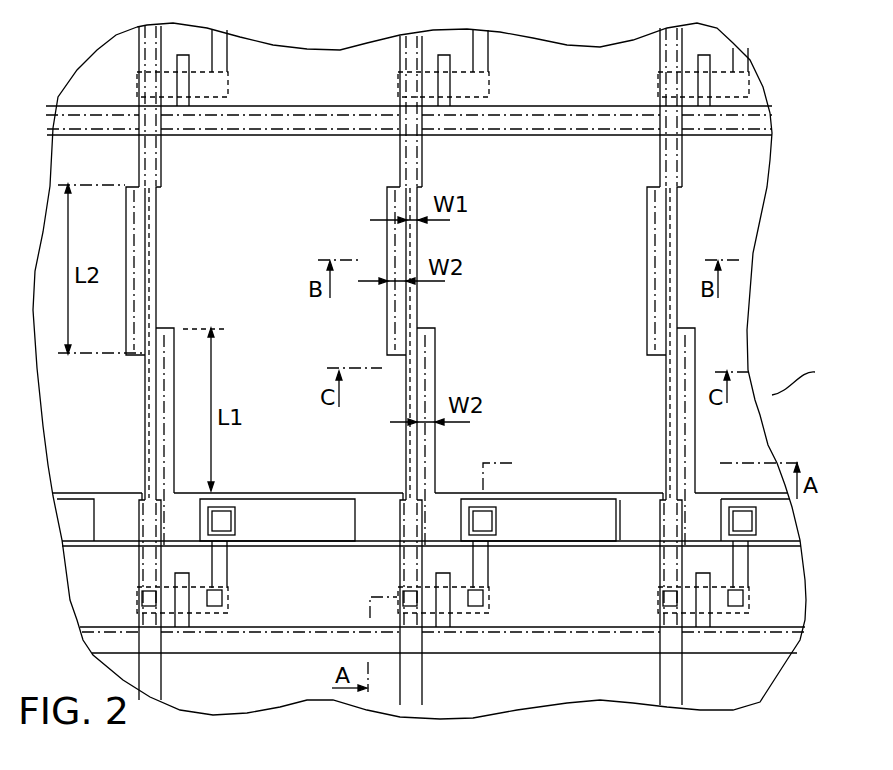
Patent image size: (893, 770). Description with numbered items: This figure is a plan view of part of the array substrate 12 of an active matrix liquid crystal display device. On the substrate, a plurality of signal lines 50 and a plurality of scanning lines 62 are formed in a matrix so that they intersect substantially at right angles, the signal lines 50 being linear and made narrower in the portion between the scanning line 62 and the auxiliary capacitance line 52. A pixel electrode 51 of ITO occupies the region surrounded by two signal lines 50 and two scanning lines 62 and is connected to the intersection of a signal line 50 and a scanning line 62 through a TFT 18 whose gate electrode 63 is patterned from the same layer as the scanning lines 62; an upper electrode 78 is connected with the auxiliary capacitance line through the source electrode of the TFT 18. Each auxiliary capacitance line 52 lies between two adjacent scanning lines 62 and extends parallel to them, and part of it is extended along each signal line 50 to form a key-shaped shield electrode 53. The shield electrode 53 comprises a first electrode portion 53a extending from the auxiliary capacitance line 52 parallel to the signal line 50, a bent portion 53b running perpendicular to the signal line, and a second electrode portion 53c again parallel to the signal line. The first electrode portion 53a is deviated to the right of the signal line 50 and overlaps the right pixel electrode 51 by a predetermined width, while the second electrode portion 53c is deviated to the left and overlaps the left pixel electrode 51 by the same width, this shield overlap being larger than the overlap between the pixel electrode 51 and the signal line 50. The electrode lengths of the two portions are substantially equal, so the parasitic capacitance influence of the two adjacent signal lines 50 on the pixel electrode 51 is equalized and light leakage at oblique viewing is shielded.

The array substrate 12 is at (772, 395).
The TFT 18 is at (237, 601).
The signal line 50 is at (153, 678).
The pixel electrode 51 is at (183, 163).
The auxiliary capacitance line 52 is at (632, 513).
The shield electrode 53 is at (121, 239).
The first electrode portion 53a is at (177, 440).
The bent portion 53b is at (172, 328).
The second electrode portion 53c is at (127, 296).
The scanning line 62 is at (762, 120).
The gate electrode 63 is at (183, 572).
The upper electrode 78 is at (285, 512).